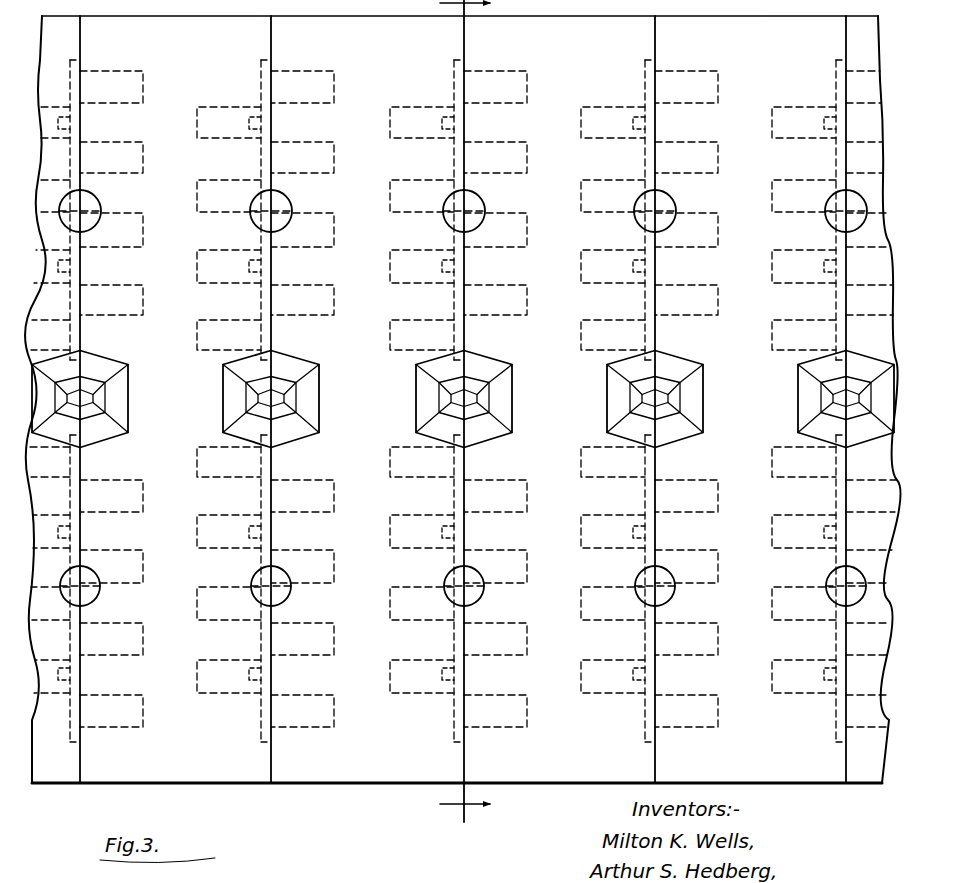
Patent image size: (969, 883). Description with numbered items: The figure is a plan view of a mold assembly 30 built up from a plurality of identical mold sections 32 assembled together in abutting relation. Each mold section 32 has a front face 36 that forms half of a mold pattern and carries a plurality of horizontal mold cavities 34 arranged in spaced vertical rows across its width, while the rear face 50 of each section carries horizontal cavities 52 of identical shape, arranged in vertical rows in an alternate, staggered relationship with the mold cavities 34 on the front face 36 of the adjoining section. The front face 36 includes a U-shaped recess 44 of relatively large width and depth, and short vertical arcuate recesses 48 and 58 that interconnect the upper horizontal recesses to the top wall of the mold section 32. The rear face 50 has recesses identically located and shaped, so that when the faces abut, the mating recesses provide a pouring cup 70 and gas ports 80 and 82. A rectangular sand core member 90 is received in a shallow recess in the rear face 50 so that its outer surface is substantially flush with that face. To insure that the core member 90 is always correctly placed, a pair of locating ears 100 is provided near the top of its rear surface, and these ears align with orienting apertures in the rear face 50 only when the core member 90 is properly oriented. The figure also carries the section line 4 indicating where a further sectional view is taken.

The section line 4- 4 is at (478, 409).
The mold assembly 30 is at (543, 792).
The mold section 32 is at (240, 787).
The horizontal mold cavities 34 is at (308, 112).
The front face 36 is at (268, 34).
The U-shaped recess 44 is at (230, 409).
The short vertical arcuate recess 48 is at (670, 594).
The rear face 50 is at (278, 765).
The horizontal cavities 52 is at (240, 250).
The short vertical arcuate recess 58 is at (670, 206).
The pouring cup 70 is at (412, 403).
The gas port 80 is at (102, 596).
The gas port 82 is at (102, 200).
The core member 90 is at (278, 532).
The locating ears 100 is at (72, 124).